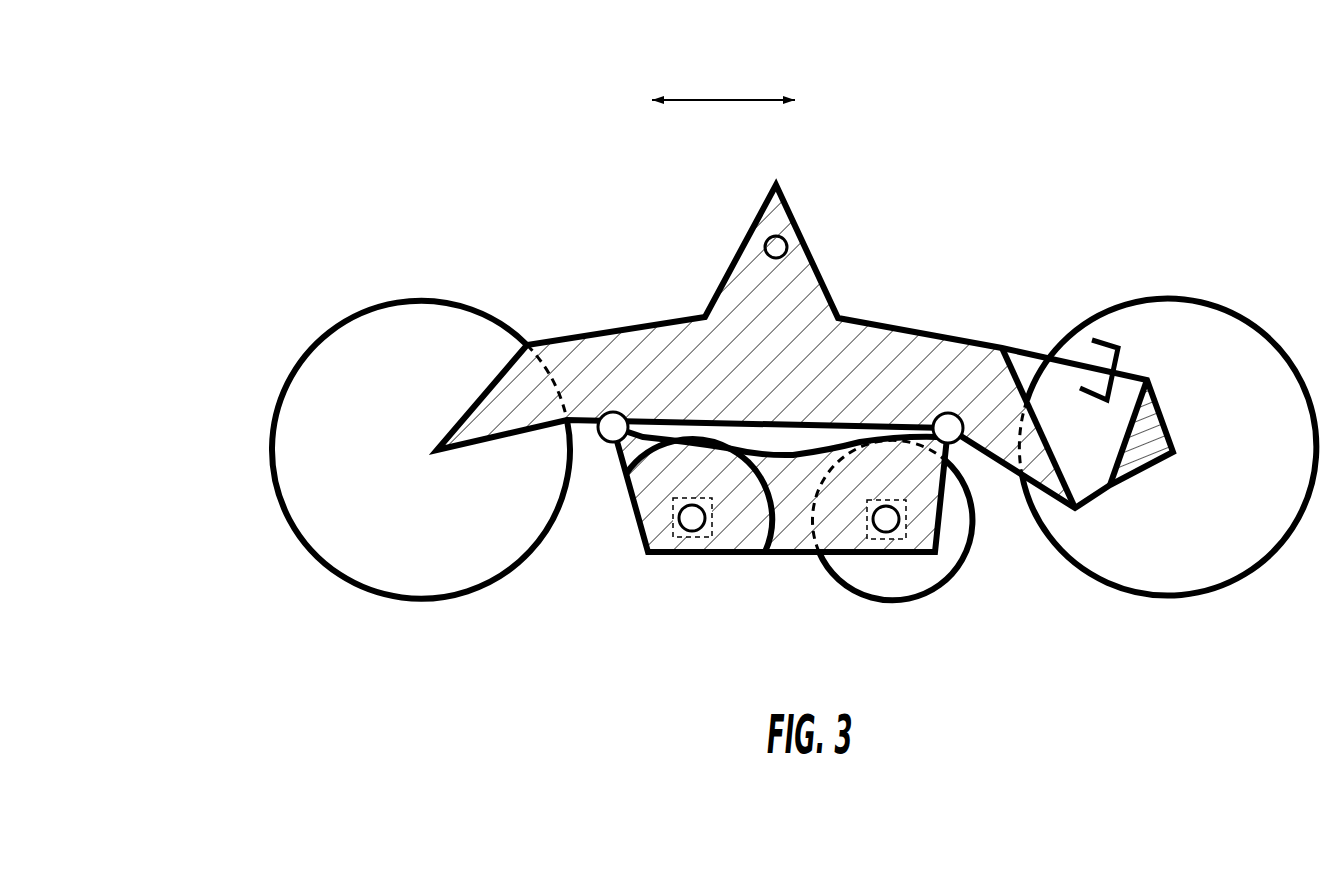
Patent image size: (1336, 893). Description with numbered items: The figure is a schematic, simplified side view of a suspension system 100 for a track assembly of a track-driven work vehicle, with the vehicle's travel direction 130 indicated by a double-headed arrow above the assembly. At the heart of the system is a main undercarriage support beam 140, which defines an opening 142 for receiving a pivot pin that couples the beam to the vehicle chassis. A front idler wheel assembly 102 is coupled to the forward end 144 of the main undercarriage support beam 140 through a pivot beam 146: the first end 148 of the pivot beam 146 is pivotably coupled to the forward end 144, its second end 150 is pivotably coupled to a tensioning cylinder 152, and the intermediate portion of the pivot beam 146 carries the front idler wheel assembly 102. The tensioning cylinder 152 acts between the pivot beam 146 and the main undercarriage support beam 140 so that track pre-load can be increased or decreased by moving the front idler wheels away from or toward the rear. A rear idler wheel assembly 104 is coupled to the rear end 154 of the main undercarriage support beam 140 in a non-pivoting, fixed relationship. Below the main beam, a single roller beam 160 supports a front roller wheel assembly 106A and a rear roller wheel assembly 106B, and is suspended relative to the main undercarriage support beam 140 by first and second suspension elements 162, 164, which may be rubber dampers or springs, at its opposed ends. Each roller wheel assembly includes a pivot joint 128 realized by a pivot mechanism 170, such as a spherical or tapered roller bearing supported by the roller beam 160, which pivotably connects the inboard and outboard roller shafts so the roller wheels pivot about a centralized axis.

The suspension system 100 is at (1095, 97).
The front idler wheel assembly 102 is at (1222, 545).
The rear idler wheel assembly 104 is at (313, 377).
The front roller wheel assembly 106A is at (930, 595).
The rear roller wheel assembly 106B is at (650, 592).
The pivot joint 128 is at (693, 538).
The pivot mechanism 170 is at (884, 538).
The travel direction 130 is at (728, 100).
The main undercarriage support beam 140 is at (700, 305).
The opening 142 is at (765, 238).
The forward end 144 is at (1077, 488).
The pivot beam 146 is at (1175, 414).
The first end 148 is at (1127, 465).
The second end 150 is at (1147, 403).
The tensioning cylinder 152 is at (1080, 363).
The rear end 154 is at (462, 428).
The roller beam 160 is at (791, 525).
The first suspension element 162 is at (955, 440).
The second suspension element 164 is at (608, 440).